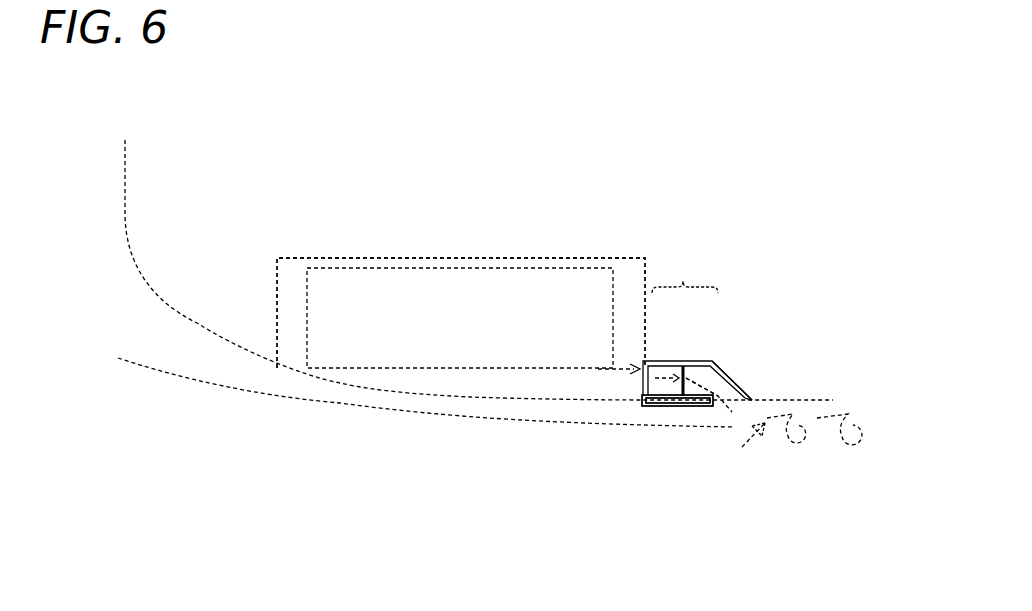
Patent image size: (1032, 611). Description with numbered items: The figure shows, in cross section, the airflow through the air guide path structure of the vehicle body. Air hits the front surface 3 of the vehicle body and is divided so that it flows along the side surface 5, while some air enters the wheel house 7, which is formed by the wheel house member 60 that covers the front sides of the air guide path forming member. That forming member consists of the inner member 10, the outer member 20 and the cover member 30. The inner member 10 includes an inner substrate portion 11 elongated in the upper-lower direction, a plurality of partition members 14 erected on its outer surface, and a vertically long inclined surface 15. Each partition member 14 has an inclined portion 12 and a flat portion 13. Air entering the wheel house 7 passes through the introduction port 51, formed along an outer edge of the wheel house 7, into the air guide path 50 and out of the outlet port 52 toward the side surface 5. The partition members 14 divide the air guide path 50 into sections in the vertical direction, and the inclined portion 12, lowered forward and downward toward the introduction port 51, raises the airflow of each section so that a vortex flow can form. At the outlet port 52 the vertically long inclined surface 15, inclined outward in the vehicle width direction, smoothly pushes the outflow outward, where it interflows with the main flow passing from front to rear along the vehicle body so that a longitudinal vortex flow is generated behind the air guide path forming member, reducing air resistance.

The front surface 3 is at (127, 212).
The side surface 5 is at (453, 395).
The wheel house 7 is at (464, 280).
The inner member 10 is at (748, 352).
The inner substrate portion 11 is at (742, 376).
The inclined portion 12 is at (670, 361).
The flat portion 13 is at (695, 361).
The partition member 14 is at (685, 270).
The vertically long inclined surface 15 is at (766, 397).
The outer member 20 is at (643, 400).
The cover member 30 is at (703, 406).
The air guide path 50 is at (708, 373).
The introduction port 51 is at (639, 374).
The outlet port 52 is at (725, 410).
The wheel house member 60 is at (547, 258).